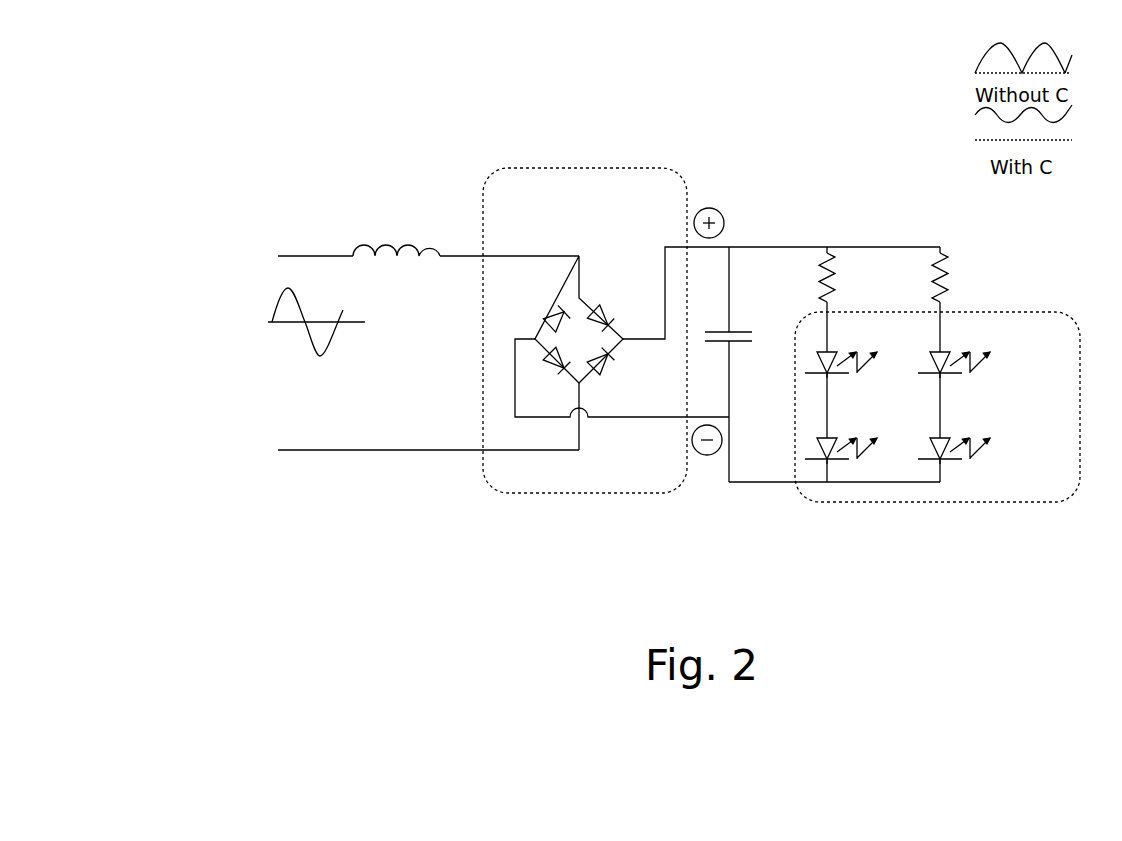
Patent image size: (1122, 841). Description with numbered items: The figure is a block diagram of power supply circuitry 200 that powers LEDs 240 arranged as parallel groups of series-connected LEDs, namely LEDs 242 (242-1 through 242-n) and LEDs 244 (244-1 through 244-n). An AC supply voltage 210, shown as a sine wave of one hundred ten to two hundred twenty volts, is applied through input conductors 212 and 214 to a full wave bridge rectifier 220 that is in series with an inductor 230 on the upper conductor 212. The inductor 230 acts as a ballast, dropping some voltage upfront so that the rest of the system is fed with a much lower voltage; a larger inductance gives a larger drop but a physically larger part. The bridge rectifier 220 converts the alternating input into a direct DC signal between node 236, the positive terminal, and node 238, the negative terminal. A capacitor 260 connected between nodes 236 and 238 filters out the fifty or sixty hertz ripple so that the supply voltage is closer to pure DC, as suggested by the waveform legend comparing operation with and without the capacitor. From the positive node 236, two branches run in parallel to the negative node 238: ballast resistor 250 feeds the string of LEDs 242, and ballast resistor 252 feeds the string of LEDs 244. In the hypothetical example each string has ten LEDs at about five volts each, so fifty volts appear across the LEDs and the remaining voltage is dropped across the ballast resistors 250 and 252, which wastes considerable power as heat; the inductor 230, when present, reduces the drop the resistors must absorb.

The power supply circuitry 200 is at (746, 91).
The AC supply voltage 210 is at (278, 312).
The input conductor 212 is at (298, 256).
The input conductor 214 is at (298, 452).
The full wave bridge rectifier 220 is at (570, 168).
The inductor 230 is at (362, 244).
The node (+) 236 is at (733, 231).
The node (−) 238 is at (724, 459).
The LEDs 240 is at (830, 504).
The LEDs 242 is at (973, 382).
The LED 242-1 is at (944, 350).
The LED 242-n is at (944, 437).
The LEDs 244 is at (866, 430).
The LED 244-1 is at (829, 350).
The LED 244-n is at (874, 461).
The ballast resistor 250 is at (948, 272).
The ballast resistor 252 is at (836, 290).
The capacitor 260 is at (742, 330).